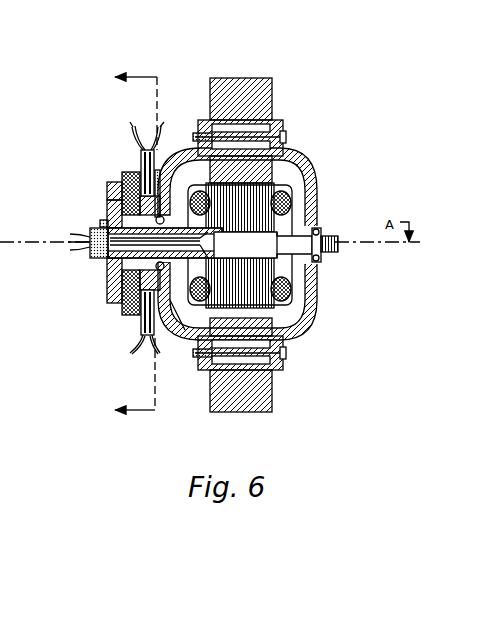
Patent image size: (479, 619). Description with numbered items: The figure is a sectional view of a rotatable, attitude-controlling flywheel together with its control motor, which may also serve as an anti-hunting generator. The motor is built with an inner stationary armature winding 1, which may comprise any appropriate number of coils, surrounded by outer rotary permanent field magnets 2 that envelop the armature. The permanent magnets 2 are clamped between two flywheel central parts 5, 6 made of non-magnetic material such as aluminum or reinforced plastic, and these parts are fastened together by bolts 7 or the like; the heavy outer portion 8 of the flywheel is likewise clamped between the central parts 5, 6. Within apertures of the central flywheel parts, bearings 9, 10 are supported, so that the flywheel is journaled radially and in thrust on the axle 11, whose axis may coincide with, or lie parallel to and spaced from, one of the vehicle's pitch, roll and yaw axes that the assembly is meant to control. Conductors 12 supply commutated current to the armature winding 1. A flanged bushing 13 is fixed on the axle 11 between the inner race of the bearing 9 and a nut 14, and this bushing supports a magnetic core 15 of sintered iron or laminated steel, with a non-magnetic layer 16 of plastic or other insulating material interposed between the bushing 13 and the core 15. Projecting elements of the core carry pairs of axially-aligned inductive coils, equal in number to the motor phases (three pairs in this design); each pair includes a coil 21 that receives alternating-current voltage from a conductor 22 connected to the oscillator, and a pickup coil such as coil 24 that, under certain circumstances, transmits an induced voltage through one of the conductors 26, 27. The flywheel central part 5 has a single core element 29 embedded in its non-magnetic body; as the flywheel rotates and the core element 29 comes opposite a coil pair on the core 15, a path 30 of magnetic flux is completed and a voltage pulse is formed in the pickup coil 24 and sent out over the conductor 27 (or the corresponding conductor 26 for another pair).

The inner stationary armature winding 1 is at (290, 200).
The outer rotary permanent field magnets 2 is at (264, 173).
The flywheel central part 5 is at (188, 337).
The flywheel central part 6 is at (313, 319).
The bolts 7 is at (290, 371).
The heavy outer portion of the flywheel 8 is at (273, 99).
The bearing 9 is at (166, 219).
The bearing 10 is at (324, 262).
The axle 11 is at (263, 245).
The conductors 12 is at (76, 233).
The flanged bushing 13 is at (110, 269).
The nut 14 is at (105, 222).
The magnetic core 15 is at (122, 307).
The non-magnetic layer 16 is at (127, 177).
The coil 21 is at (138, 158).
The conductor 22 is at (132, 126).
The coil 24 is at (140, 322).
The conductor 26 is at (162, 130).
The conductor 27 is at (157, 353).
The core element 29 is at (162, 182).
The path of magnetic flux 30 is at (128, 170).